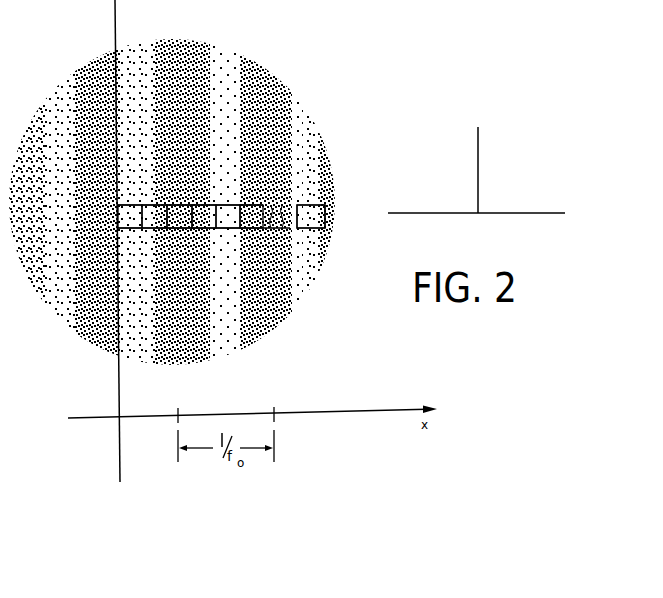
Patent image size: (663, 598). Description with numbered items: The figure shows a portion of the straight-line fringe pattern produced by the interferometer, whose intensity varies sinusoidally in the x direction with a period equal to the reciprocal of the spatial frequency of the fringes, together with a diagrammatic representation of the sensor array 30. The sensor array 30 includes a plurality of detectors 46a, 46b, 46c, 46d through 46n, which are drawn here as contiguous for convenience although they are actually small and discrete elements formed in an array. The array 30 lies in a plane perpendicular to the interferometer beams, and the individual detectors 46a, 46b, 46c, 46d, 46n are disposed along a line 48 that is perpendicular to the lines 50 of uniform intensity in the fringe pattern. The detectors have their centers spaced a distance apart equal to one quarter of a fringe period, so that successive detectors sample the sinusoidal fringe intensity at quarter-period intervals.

The sensor array 30 is at (237, 207).
The detector 46a is at (140, 204).
The detector 46b is at (158, 222).
The detector 46c is at (182, 205).
The detector 46d is at (203, 222).
The detector 46n is at (310, 223).
The line 48 is at (557, 213).
The lines of uniform intensity 50 is at (478, 137).